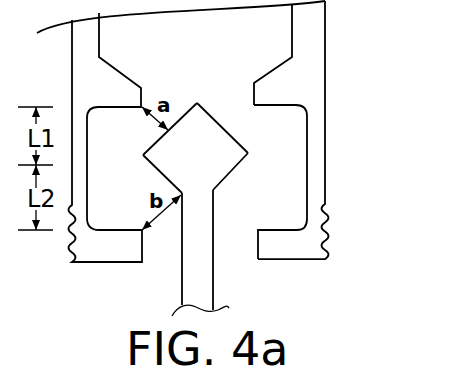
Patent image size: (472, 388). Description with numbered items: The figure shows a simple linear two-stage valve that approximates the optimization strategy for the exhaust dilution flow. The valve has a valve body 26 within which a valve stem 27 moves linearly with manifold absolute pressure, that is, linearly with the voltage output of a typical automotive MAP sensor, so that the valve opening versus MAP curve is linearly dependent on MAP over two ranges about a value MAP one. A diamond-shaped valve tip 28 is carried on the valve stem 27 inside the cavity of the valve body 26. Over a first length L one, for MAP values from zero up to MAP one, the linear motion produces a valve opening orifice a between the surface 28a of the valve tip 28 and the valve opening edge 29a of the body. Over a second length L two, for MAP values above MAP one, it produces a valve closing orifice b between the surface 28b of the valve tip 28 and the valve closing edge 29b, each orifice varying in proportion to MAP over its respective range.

The valve body 26 is at (325, 61).
The valve stem 27 is at (200, 277).
The valve tip 28 is at (212, 164).
The surface of valve tip 28a is at (222, 126).
The surface of valve tip 28b is at (150, 164).
The valve opening edge 29a is at (253, 98).
The valve closing edge 29b is at (257, 228).